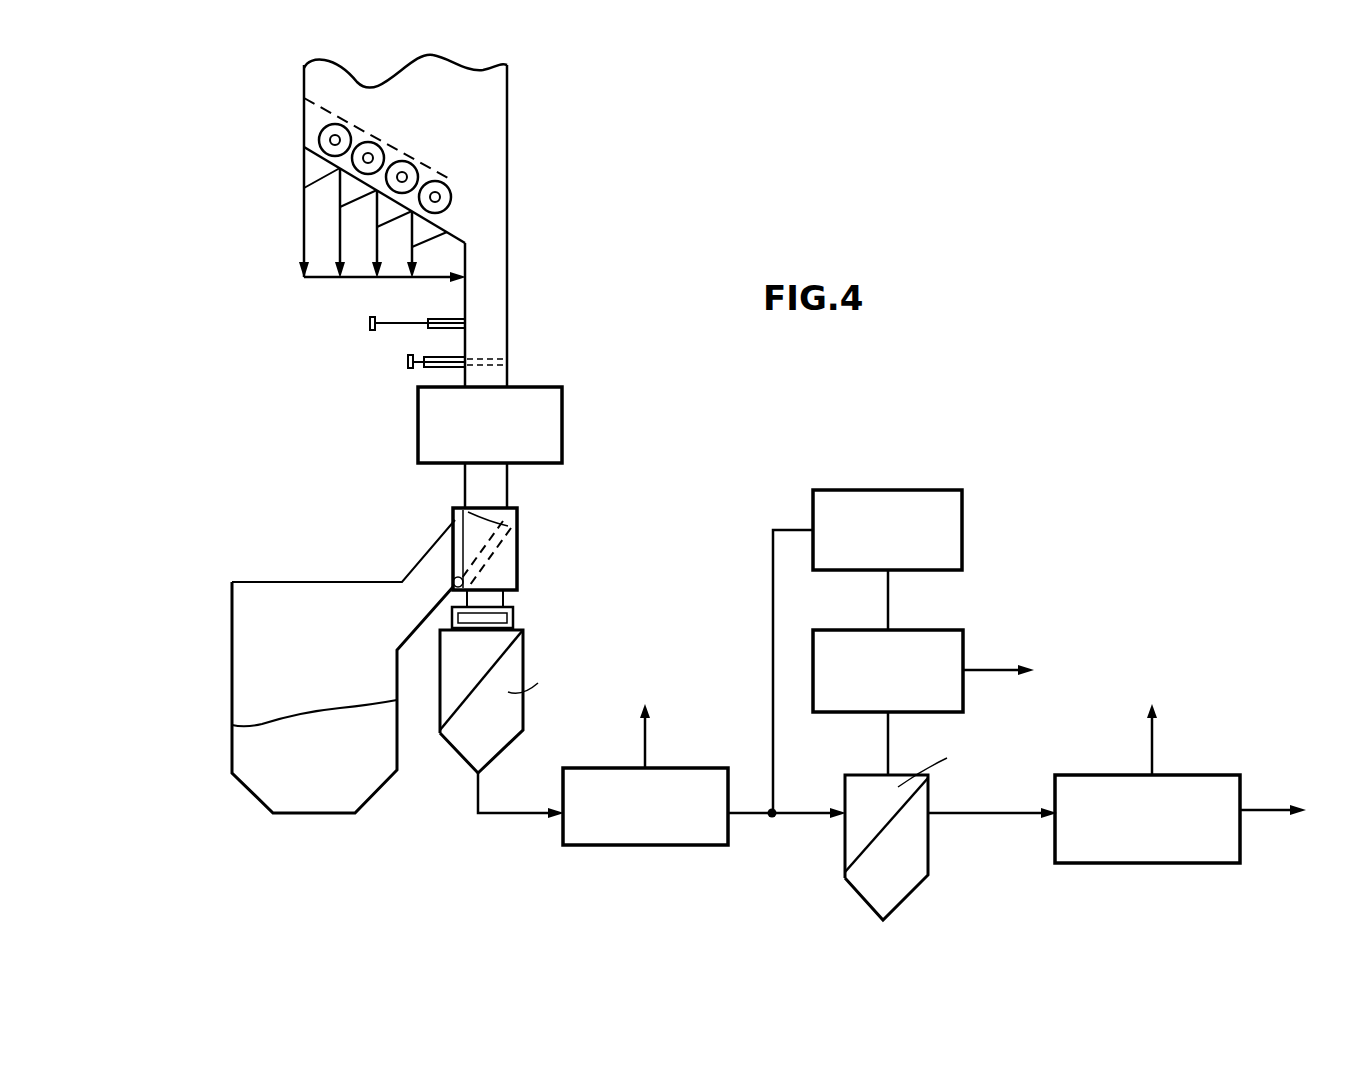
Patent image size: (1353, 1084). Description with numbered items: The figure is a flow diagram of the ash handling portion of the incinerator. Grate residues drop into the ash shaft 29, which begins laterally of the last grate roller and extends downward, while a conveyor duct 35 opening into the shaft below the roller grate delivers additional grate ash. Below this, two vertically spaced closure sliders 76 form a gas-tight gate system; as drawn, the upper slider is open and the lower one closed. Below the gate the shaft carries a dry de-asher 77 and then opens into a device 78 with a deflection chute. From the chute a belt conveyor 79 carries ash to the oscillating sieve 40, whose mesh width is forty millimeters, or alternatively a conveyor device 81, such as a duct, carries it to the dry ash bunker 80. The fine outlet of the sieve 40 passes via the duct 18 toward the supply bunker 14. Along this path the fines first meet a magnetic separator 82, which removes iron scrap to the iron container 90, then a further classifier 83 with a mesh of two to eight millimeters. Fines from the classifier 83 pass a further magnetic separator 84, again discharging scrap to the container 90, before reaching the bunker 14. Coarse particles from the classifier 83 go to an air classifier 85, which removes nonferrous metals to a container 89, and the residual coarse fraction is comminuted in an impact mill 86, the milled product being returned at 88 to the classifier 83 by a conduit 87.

The supply bunker 14 is at (1270, 808).
The duct 18 is at (507, 815).
The ash shaft 29 is at (483, 277).
The conveyor duct 35 is at (317, 278).
The oscillating sieve 40 is at (468, 738).
The closure sliders 76 is at (393, 328).
The dry de-asher 77 is at (437, 453).
The deflection chute device 78 is at (497, 570).
The belt conveyor 79 is at (487, 617).
The ash bunker 80 is at (240, 679).
The conveyor device 81 is at (427, 568).
The magnetic separator 82 is at (642, 833).
The further classifier 83 is at (907, 877).
The further magnetic separator 84 is at (1215, 853).
The air classifier 85 is at (814, 633).
The impact mill 86 is at (945, 548).
The conduit 87 is at (888, 738).
The return conveyor 88 is at (778, 593).
The nonferrous metal container 89 is at (987, 666).
The iron container 90 is at (642, 743).